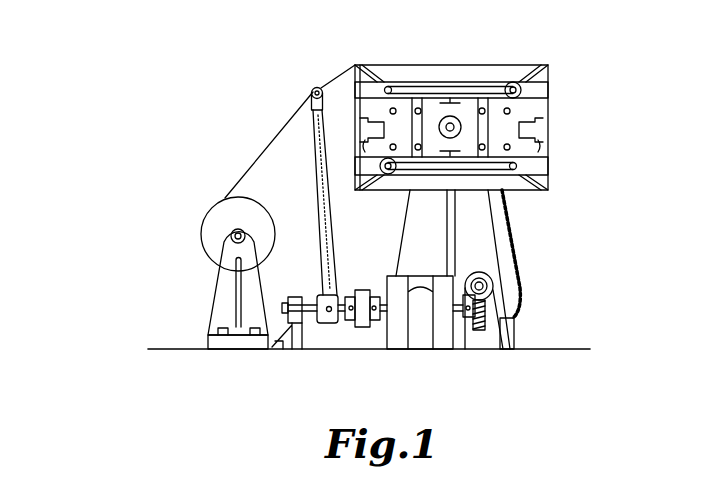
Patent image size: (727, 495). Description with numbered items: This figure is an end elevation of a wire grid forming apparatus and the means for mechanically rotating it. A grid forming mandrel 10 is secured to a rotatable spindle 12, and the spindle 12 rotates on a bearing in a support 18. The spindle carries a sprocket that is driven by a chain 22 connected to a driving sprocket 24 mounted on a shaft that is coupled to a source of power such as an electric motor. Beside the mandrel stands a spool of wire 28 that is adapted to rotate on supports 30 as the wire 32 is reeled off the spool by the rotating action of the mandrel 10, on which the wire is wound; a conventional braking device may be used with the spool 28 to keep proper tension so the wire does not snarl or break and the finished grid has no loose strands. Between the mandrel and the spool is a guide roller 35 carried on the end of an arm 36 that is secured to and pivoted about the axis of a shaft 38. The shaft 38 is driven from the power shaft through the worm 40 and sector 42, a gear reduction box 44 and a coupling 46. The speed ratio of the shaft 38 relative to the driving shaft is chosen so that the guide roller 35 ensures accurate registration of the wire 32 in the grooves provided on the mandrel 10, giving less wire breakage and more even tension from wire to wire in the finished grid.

The mandrel 10 is at (554, 88).
The spindle 12 is at (456, 122).
The support 18 is at (408, 228).
The chain 22 is at (507, 222).
The driving sprocket 24 is at (516, 278).
The spool of wire 28 is at (212, 227).
The supports 30 is at (220, 305).
The wire 32 is at (282, 131).
The guide roller 35 is at (320, 86).
The arm 36 is at (316, 185).
The shaft 38 is at (302, 300).
The worm 40 is at (478, 272).
The sector 42 is at (508, 318).
The gear reduction box 44 is at (420, 336).
The coupling 46 is at (363, 292).